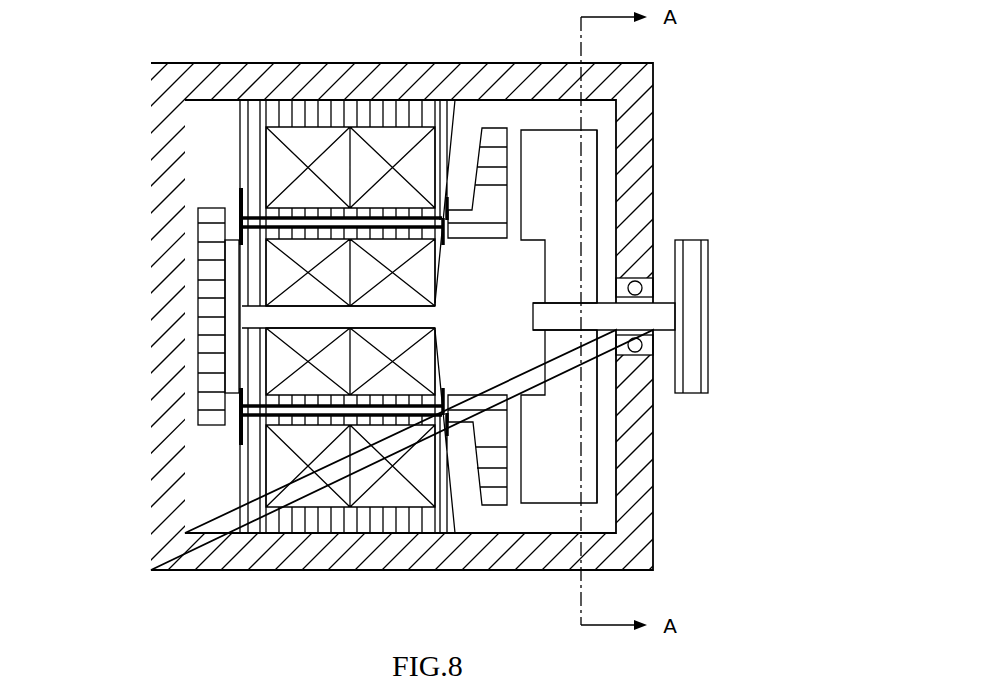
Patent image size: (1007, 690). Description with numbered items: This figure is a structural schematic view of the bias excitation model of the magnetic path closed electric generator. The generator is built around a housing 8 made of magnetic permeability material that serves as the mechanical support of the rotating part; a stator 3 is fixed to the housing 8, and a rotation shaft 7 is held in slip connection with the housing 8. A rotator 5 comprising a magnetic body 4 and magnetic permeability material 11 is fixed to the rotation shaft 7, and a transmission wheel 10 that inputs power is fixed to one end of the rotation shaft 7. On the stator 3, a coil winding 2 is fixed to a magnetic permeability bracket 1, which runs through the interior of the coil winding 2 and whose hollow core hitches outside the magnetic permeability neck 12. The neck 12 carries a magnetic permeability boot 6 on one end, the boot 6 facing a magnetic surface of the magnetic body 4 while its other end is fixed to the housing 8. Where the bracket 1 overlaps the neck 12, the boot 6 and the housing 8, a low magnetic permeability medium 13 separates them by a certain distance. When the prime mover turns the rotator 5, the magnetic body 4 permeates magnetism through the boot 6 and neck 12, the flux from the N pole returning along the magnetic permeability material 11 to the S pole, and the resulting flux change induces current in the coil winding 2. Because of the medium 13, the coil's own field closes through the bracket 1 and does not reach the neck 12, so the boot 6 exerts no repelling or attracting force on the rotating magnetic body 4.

The magnetic permeability bracket 1 is at (262, 520).
The coil winding 2 is at (303, 485).
The stator 3 is at (330, 537).
The magnetic body 4 is at (577, 478).
The rotator 5 is at (598, 435).
The magnetic permeability boot 6 is at (495, 477).
The rotation shaft 7 is at (658, 322).
The housing 8 is at (395, 533).
The transmission wheel 10 is at (693, 372).
The magnetic permeability material 11 is at (213, 315).
The magnetic permeability neck 12 is at (332, 225).
The low magnetic permeability medium 13 is at (240, 212).